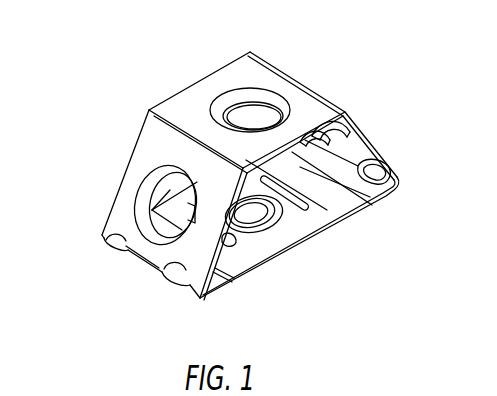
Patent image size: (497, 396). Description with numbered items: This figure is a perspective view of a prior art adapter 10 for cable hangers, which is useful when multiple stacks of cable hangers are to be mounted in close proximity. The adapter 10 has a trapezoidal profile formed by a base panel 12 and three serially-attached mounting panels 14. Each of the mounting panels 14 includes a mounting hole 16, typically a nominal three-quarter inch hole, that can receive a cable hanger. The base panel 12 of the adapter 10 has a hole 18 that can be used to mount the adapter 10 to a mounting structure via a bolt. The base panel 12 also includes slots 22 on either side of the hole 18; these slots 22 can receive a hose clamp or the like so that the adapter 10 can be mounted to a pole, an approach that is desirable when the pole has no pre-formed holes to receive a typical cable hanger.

The adapter 10 is at (230, 157).
The base panel 12 is at (318, 196).
The mounting panels 14 is at (175, 98).
The mounting hole 16 is at (252, 115).
The hole 18 is at (292, 219).
The slots 22 is at (224, 242).